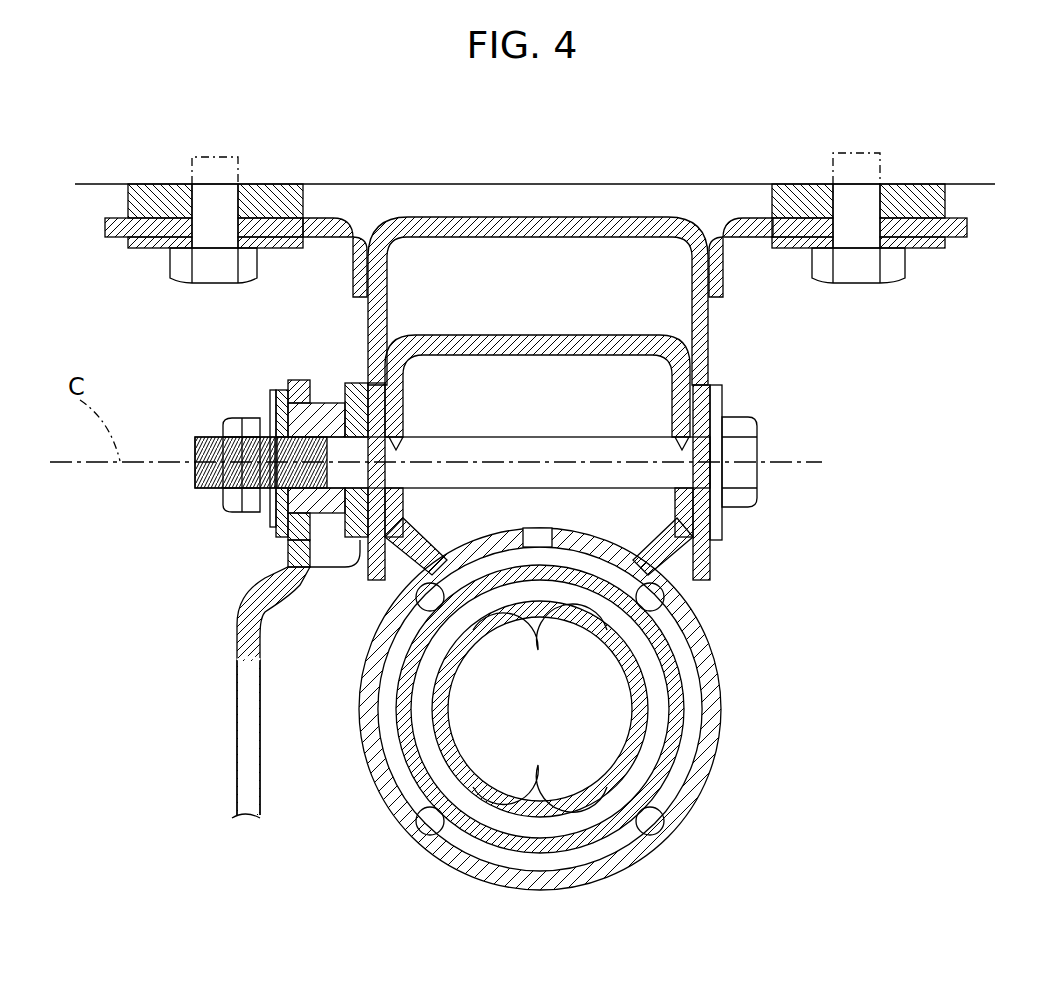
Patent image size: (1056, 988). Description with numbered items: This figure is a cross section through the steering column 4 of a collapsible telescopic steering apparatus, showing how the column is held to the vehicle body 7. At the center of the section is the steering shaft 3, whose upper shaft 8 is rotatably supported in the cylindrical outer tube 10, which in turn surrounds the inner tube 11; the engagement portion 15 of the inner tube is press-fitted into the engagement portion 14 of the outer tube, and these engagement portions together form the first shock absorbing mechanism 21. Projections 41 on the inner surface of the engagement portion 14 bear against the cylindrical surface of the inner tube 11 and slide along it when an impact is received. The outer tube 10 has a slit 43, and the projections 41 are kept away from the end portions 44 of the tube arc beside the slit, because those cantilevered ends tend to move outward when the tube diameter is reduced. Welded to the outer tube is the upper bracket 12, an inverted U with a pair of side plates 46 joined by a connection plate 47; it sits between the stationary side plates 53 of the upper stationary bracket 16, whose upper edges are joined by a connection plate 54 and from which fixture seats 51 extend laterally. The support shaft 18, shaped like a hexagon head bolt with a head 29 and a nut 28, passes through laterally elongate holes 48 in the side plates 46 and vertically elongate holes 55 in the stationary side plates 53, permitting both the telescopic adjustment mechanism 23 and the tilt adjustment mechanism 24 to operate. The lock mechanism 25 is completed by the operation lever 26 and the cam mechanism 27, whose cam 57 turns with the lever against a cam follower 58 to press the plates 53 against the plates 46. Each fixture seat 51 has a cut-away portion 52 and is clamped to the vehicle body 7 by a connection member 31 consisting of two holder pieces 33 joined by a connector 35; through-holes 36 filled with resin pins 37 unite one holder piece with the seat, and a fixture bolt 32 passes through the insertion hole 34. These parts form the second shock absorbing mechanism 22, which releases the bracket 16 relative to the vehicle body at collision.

The steering shaft 3 is at (627, 688).
The steering column 4 is at (627, 709).
The vehicle body 7 is at (975, 184).
The upper shaft 8 is at (627, 688).
The outer tube 10 is at (707, 720).
The inner tube 11 is at (672, 667).
The upper bracket 12 is at (643, 600).
The engagement portion 14 is at (687, 812).
The engagement portion 15 is at (630, 867).
The upper stationary bracket 16 is at (587, 304).
The support shaft 18 is at (535, 440).
The first shock absorbing mechanism 21 is at (726, 852).
The second shock absorbing mechanism 22 is at (535, 230).
The telescopic adjustment mechanism 23 is at (466, 600).
The tilt adjustment mechanism 24 is at (335, 383).
The lock mechanism 25 is at (262, 388).
The operation lever 26 is at (245, 720).
The cam mechanism 27 is at (219, 557).
The nut 28 is at (225, 495).
The head 29 is at (745, 495).
The connection member 31 is at (128, 200).
The fixture bolt 32 is at (175, 283).
The holder piece 33 is at (300, 207).
The insertion hole 34 is at (243, 230).
The connector 35 is at (250, 225).
The through-hole 36 is at (153, 212).
The resin pin 37 is at (150, 200).
The projection 41 is at (540, 709).
The slit 43 is at (540, 532).
The end portion of arc 44 is at (515, 530).
The side plate 46 is at (396, 498).
The connection plate 47 is at (533, 426).
The laterally elongate hole 48 is at (400, 440).
The fixture seat 51 is at (348, 220).
The cut-away portion 52 is at (255, 215).
The stationary side plate 53 is at (378, 578).
The connection plate 54 is at (525, 228).
The vertically elongate hole 55 is at (380, 395).
The cam 57 is at (290, 540).
The cam follower 58 is at (290, 565).